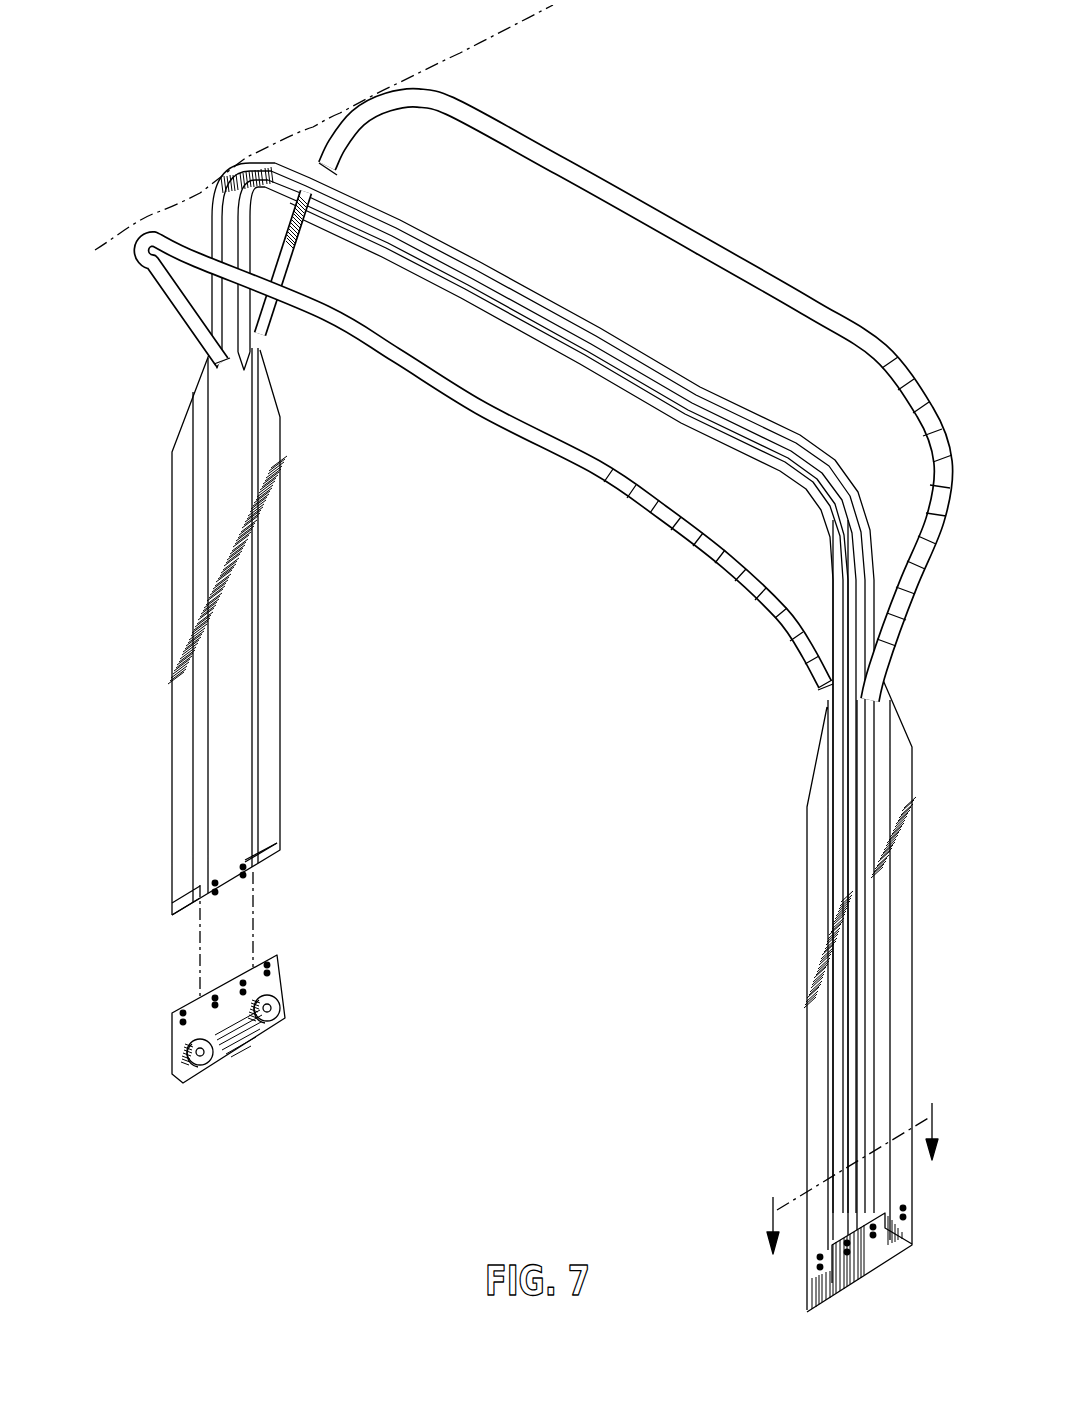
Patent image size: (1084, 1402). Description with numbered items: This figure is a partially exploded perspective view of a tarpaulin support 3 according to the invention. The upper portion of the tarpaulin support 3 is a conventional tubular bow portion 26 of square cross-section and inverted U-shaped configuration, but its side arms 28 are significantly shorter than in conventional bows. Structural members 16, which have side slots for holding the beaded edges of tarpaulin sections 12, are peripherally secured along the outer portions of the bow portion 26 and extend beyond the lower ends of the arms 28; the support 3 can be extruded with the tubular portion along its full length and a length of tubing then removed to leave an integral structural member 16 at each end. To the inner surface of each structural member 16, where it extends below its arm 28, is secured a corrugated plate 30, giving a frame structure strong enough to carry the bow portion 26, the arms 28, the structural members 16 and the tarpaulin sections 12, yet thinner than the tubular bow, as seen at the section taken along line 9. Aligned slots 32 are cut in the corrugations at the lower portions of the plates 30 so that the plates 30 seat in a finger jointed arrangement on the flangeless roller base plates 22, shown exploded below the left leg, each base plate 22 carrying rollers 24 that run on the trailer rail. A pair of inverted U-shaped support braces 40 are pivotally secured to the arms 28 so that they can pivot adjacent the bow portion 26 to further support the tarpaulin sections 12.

The tarpaulin support 3 is at (569, 500).
The section line 9- 9 is at (853, 1197).
The tarpaulin section 12 is at (327, 124).
The structural member 16 is at (857, 773).
The base plate 22 is at (288, 956).
The roller 24 is at (287, 993).
The tubular bow portion 26 is at (610, 350).
The side arm 28 is at (243, 312).
The corrugated plate 30 is at (270, 633).
The slot 32 is at (167, 907).
The support brace 40 is at (663, 233).